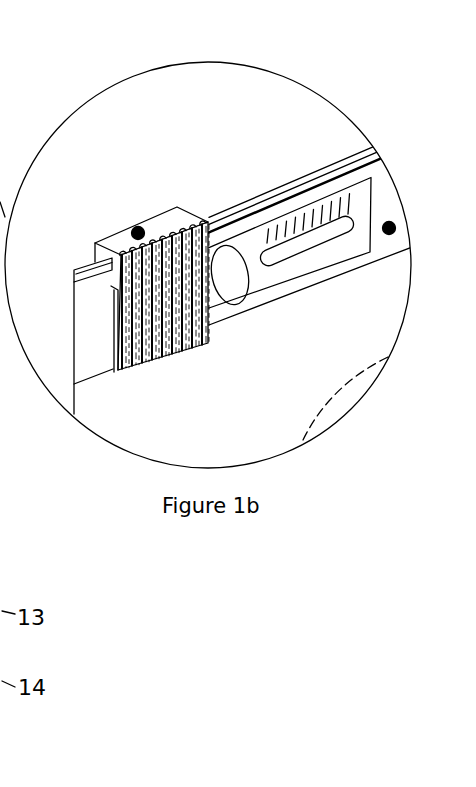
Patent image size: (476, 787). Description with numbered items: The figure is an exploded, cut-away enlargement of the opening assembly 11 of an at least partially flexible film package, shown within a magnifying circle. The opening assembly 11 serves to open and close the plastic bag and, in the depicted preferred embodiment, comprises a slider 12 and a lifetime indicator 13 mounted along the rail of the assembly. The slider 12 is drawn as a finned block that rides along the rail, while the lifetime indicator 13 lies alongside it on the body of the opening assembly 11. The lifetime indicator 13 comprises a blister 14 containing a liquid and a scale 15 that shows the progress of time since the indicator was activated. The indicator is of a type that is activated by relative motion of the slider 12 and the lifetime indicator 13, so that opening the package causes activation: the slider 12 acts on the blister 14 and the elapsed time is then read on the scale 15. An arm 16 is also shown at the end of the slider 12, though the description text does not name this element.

The opening assembly 11 is at (395, 225).
The slider 12 is at (132, 228).
The lifetime indicator 13 is at (302, 150).
The blister 14 is at (225, 215).
The scale 15 is at (324, 275).
The bracket arm 16 is at (94, 358).